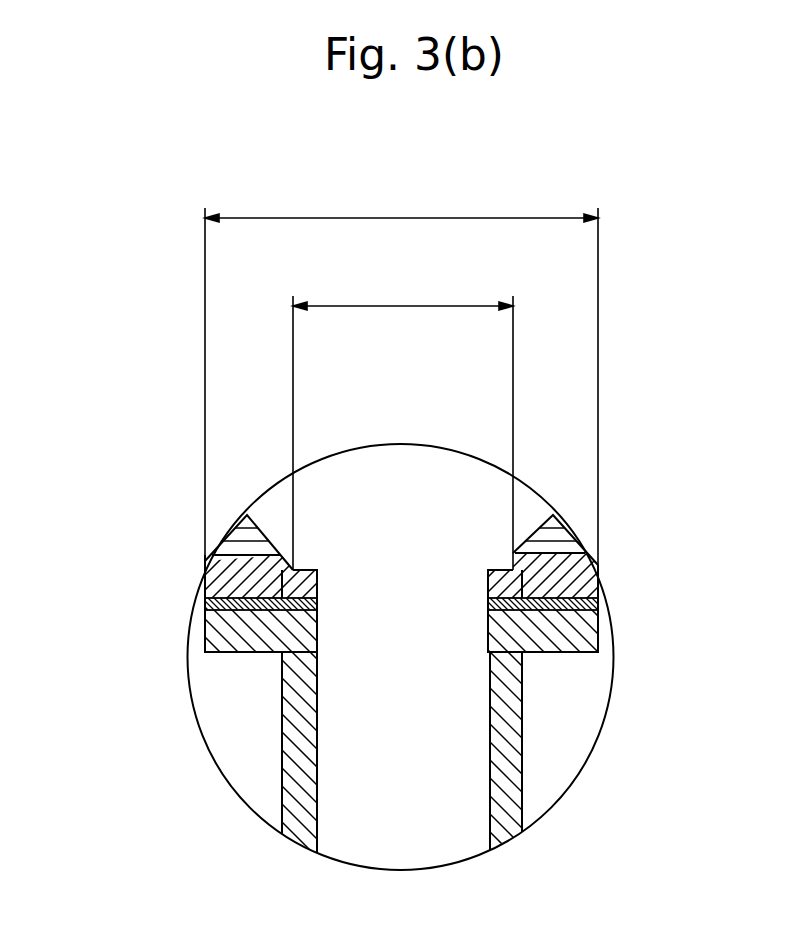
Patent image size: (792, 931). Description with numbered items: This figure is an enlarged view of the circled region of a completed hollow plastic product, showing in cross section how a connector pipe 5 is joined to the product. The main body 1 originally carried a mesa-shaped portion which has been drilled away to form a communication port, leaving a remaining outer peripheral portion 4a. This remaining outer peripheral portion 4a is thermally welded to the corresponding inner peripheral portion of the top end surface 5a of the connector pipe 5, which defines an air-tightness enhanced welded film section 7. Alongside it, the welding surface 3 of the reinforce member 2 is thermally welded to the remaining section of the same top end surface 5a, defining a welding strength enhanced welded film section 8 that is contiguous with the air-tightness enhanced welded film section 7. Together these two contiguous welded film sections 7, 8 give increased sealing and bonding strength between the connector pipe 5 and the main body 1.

The main body 1 is at (228, 537).
The reinforce member 2 is at (592, 565).
The welding surface 3 is at (603, 609).
The remaining outer peripheral portion 4a is at (295, 588).
The connector pipe 5 is at (522, 747).
The top end surface 5a is at (490, 616).
The air-tightness enhanced welded film section 7 is at (403, 412).
The welding strength enhanced welded film section 8 is at (401, 366).